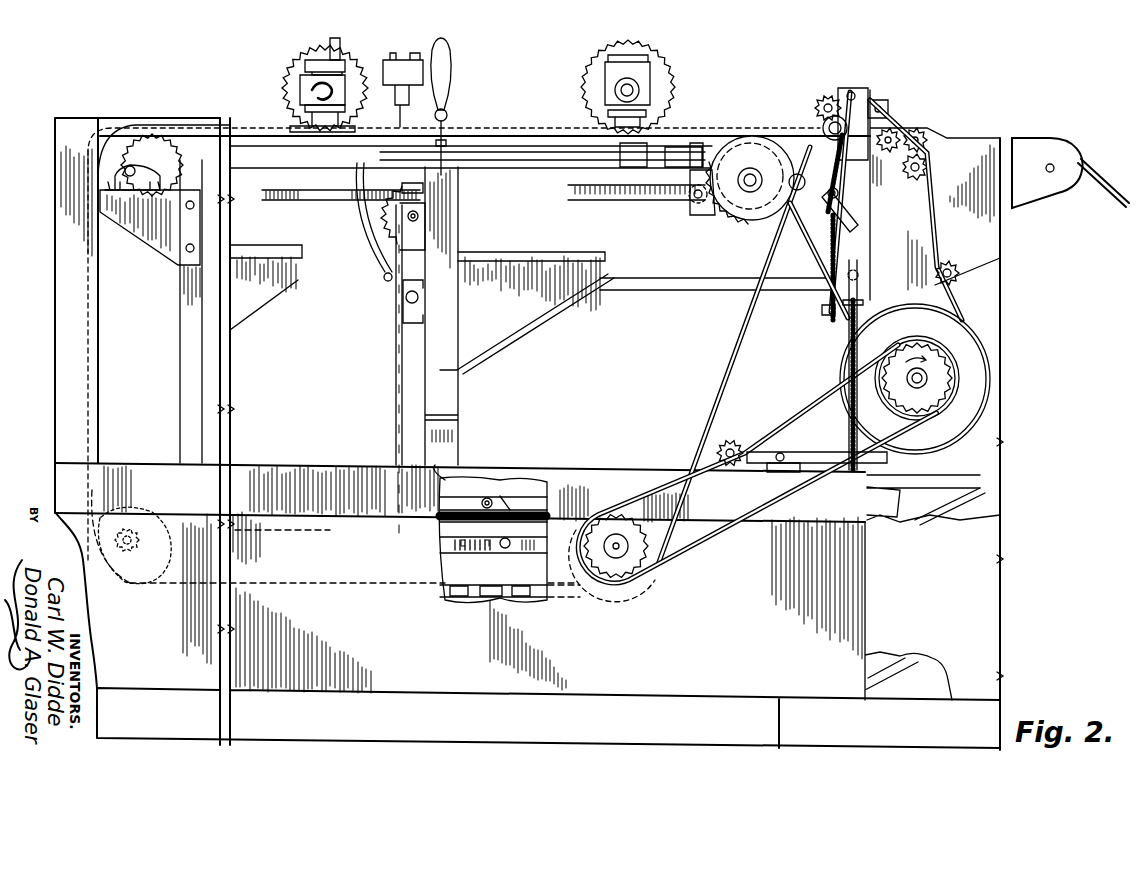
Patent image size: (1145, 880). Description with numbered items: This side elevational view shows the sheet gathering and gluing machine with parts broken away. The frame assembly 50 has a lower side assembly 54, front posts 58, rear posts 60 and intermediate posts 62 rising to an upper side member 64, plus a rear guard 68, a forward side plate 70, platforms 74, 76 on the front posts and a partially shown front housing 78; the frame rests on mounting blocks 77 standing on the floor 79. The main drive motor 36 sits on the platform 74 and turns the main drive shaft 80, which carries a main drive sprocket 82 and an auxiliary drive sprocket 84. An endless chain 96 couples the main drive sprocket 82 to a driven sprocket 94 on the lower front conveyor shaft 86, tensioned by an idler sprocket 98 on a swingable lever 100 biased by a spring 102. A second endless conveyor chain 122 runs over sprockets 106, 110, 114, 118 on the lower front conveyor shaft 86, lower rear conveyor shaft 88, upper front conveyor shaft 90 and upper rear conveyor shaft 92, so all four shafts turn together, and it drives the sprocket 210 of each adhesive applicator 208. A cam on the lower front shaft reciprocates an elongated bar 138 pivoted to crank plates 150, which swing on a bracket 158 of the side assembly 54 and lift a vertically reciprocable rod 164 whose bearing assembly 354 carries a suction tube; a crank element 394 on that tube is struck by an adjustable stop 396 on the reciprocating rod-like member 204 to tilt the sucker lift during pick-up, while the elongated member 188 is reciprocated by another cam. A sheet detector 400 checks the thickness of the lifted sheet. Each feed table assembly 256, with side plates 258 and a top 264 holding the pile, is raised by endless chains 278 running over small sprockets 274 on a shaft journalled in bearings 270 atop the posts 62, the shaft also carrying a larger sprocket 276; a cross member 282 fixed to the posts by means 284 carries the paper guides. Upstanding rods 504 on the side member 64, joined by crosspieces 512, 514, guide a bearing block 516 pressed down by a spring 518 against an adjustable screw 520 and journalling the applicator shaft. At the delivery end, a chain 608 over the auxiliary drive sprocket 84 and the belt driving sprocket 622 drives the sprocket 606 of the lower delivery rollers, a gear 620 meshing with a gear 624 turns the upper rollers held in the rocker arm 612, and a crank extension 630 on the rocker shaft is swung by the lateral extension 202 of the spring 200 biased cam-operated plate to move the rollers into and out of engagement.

The main drive motor 36 is at (945, 452).
The frame assembly 50 is at (358, 690).
The lower side assembly 54 is at (548, 690).
The front posts 58 is at (843, 437).
The rear posts 60 is at (182, 392).
The intermediate posts 62 is at (458, 397).
The upper side member 64 is at (500, 146).
The rear guard 68 is at (55, 404).
The forward side plate 70 is at (970, 148).
The motor-supporting platform 74 is at (975, 492).
The pump-supporting platform 76 is at (893, 674).
The mounting blocks 77 is at (779, 727).
The front housing 78 is at (987, 596).
The floor 79 is at (428, 745).
The main drive shaft 80 is at (920, 376).
The main drive sprocket 82 is at (930, 378).
The auxiliary drive sprocket 84 is at (960, 430).
The lower front conveyor shaft 86 is at (640, 580).
The lower rear conveyor shaft 88 is at (134, 545).
The upper front conveyor shaft 90 is at (750, 170).
The upper rear conveyor shaft 92 is at (130, 160).
The driven sprocket 94 is at (645, 560).
The endless chain 96 is at (720, 535).
The idler sprocket 98 is at (738, 444).
The swingable lever 100 is at (810, 465).
The spring 102 is at (872, 355).
The conveyor sprocket 106 is at (590, 588).
The conveyor sprocket 110 is at (155, 583).
The conveyor sprocket 114 is at (710, 215).
The conveyor sprocket 118 is at (105, 152).
The endless conveyor chain 122 is at (166, 130).
The elongated bar 138 is at (447, 556).
The crank plates 150 is at (455, 528).
The bracket 158 is at (522, 506).
The vertically reciprocable rod 164 is at (462, 480).
The elongated member 188 is at (652, 200).
The spring means 200 is at (820, 308).
The lateral extension 202 is at (840, 193).
The rod-like member 204 is at (530, 152).
The adhesive applicator 208 is at (292, 70).
The sprocket 210 is at (312, 58).
The feed table assembly 256 is at (510, 340).
The side plate 258 is at (548, 312).
The top 264 is at (605, 258).
The bearing 270 is at (400, 196).
The small sprockets 274 is at (396, 234).
The larger sprocket 276 is at (388, 212).
The endless chain 278 is at (395, 350).
The cross member 282 is at (402, 302).
The securing means 284 is at (412, 315).
The bearing assembly 354 is at (448, 110).
The crank element 394 is at (448, 140).
The adjustable stop 396 is at (446, 160).
The sheet detector 400 is at (392, 58).
The upstanding rods 504 is at (305, 108).
The crosspiece 512 is at (342, 52).
The crosspiece 514 is at (355, 118).
The bearing block 516 is at (300, 88).
The spring means 518 is at (322, 58).
The adjustable screw 520 is at (333, 128).
The sprocket 606 is at (823, 125).
The chain 608 is at (954, 286).
The rocker arm 612 is at (888, 108).
The gear 620 is at (855, 96).
The driving sprocket 622 is at (895, 130).
The gear 624 is at (824, 96).
The crank extension 630 is at (840, 190).